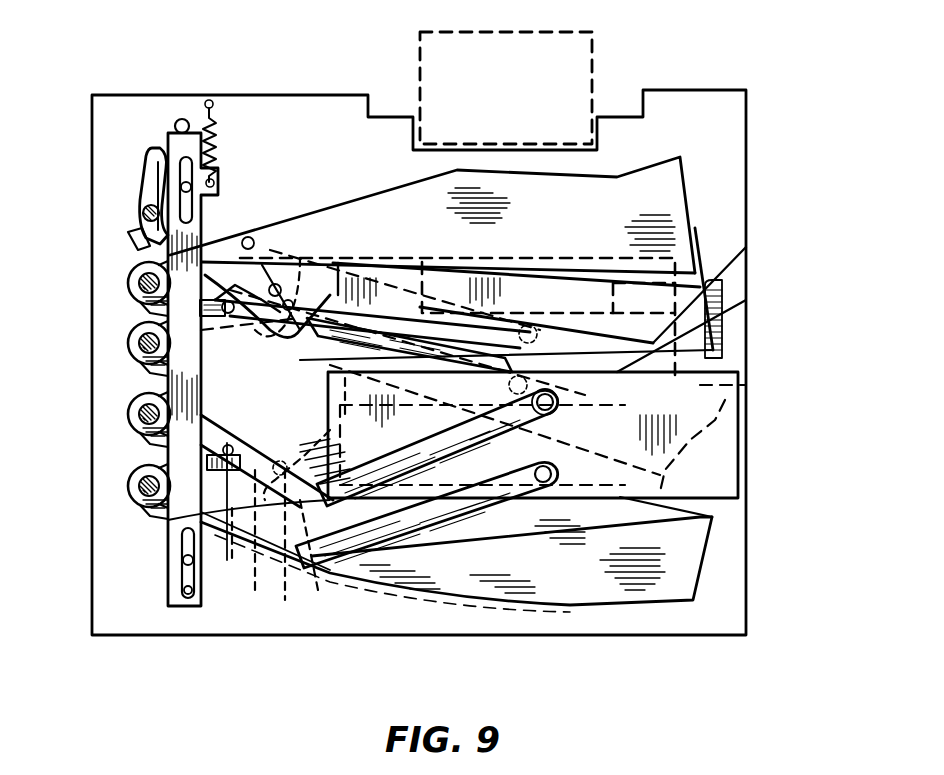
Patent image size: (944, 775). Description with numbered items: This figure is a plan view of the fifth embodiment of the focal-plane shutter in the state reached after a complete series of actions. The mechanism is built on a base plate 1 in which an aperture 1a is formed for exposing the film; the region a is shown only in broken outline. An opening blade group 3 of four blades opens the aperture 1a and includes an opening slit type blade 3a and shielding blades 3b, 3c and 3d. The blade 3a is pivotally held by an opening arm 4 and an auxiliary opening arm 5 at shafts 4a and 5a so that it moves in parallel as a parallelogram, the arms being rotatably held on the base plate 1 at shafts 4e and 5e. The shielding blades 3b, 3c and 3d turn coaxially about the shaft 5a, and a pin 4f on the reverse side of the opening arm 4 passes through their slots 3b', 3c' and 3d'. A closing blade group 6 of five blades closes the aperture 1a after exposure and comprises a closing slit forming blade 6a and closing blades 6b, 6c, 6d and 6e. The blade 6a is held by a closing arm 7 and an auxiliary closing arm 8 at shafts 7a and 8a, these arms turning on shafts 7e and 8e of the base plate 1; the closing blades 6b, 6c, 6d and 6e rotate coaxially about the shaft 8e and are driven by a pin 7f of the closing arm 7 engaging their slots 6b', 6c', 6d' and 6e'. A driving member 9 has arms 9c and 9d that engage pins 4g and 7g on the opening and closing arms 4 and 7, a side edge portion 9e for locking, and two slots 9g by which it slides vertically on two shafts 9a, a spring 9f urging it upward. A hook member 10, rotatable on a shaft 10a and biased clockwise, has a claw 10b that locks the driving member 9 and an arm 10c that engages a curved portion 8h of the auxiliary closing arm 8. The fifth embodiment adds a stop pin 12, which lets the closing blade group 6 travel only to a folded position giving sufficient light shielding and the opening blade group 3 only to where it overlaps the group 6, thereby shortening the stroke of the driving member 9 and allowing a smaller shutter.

The base plate 1 is at (731, 604).
The aperture 1a is at (712, 408).
The cassette region a is at (565, 56).
The opening blade group 3 is at (803, 395).
The opening slit type blade 3a is at (720, 424).
The shielding blade 3b is at (297, 447).
The slot 3b' is at (317, 563).
The shielding blade 3c is at (553, 522).
The slot 3c' is at (358, 399).
The shielding blade 3d is at (499, 564).
The slot 3d' is at (244, 545).
The opening arm 4 is at (132, 417).
The shaft 4a is at (551, 425).
The shaft 4e is at (137, 433).
The pin 4f is at (276, 553).
The pin 4g is at (230, 444).
The auxiliary opening arm 5 is at (132, 488).
The shaft 5a is at (543, 484).
The shaft 5e is at (137, 504).
The closing blade group 6 is at (803, 148).
The closing slit forming blade 6a is at (713, 348).
The closing blade 6b is at (397, 356).
The slot 6b' is at (246, 203).
The closing blade 6c is at (564, 293).
The slot 6c' is at (332, 213).
The closing blade 6d is at (518, 300).
The slot 6d' is at (302, 209).
The closing blade 6e is at (482, 215).
The slot 6e' is at (277, 189).
The closing arm 7 is at (132, 347).
The shaft 7a is at (556, 400).
The shaft 7e is at (137, 362).
The pin 7f is at (302, 284).
The pin 7g is at (248, 318).
The auxiliary closing arm 8 is at (132, 287).
The shaft 8a is at (532, 335).
The shaft 8e is at (137, 301).
The curved portion 8h is at (128, 232).
The driving member 9 is at (171, 541).
The shaft 9a is at (185, 182).
The arm 9c is at (226, 544).
The arm 9d is at (212, 332).
The side edge portion 9e is at (178, 120).
The spring 9f is at (215, 128).
The slot 9g is at (194, 138).
The hook member 10 is at (143, 190).
The shaft 10a is at (142, 213).
The claw 10b is at (150, 153).
The arm 10c is at (128, 266).
The stop pin 12 is at (184, 118).